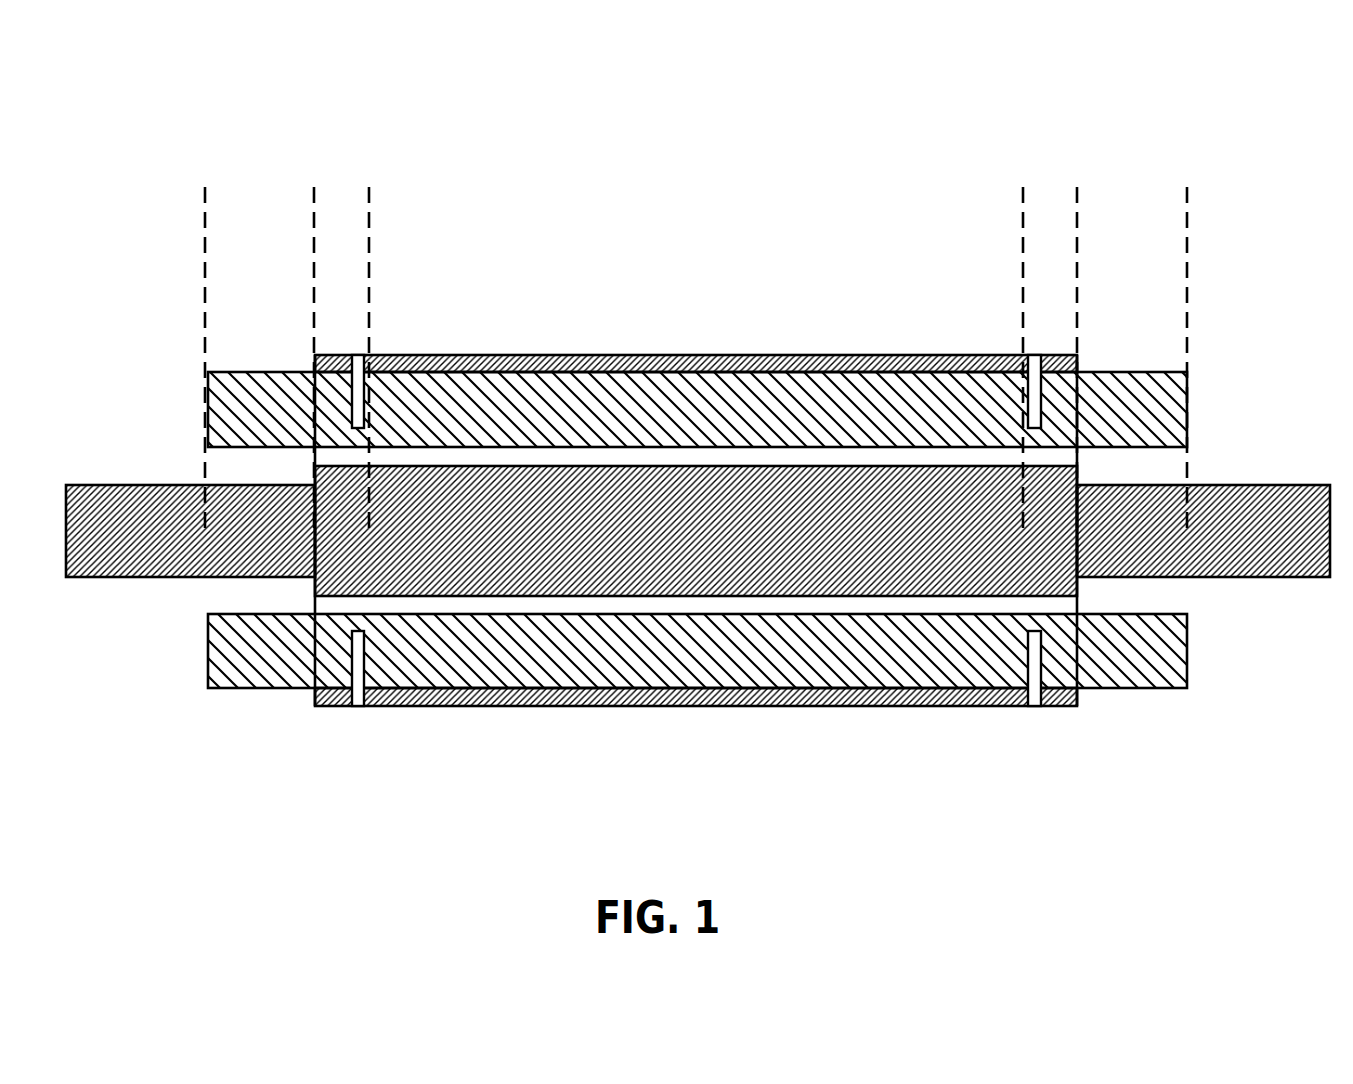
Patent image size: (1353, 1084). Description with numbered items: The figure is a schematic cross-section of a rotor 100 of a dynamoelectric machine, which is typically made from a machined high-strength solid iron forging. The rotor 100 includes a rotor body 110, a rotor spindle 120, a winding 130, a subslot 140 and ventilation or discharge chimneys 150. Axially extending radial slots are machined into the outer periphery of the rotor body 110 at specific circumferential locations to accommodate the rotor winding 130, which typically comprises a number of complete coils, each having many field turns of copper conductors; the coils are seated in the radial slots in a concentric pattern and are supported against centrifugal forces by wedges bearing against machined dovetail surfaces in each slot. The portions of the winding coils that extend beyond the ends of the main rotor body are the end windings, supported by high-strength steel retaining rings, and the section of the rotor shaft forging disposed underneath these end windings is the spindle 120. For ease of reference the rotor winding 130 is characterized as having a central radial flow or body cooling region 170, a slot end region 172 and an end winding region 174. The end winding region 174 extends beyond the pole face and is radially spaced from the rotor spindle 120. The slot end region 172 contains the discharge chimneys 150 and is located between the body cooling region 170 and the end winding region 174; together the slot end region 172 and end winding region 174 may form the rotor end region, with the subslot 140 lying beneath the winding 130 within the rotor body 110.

The rotor 100 is at (168, 102).
The rotor body 110 is at (730, 695).
The rotor spindle 120 is at (170, 578).
The winding 130 is at (1187, 415).
The subslot 140 is at (561, 455).
The ventilation or discharge chimneys 150 is at (357, 355).
The body cooling region 170 is at (1022, 197).
The slot end region 172 is at (315, 197).
The end winding region 174 is at (313, 197).